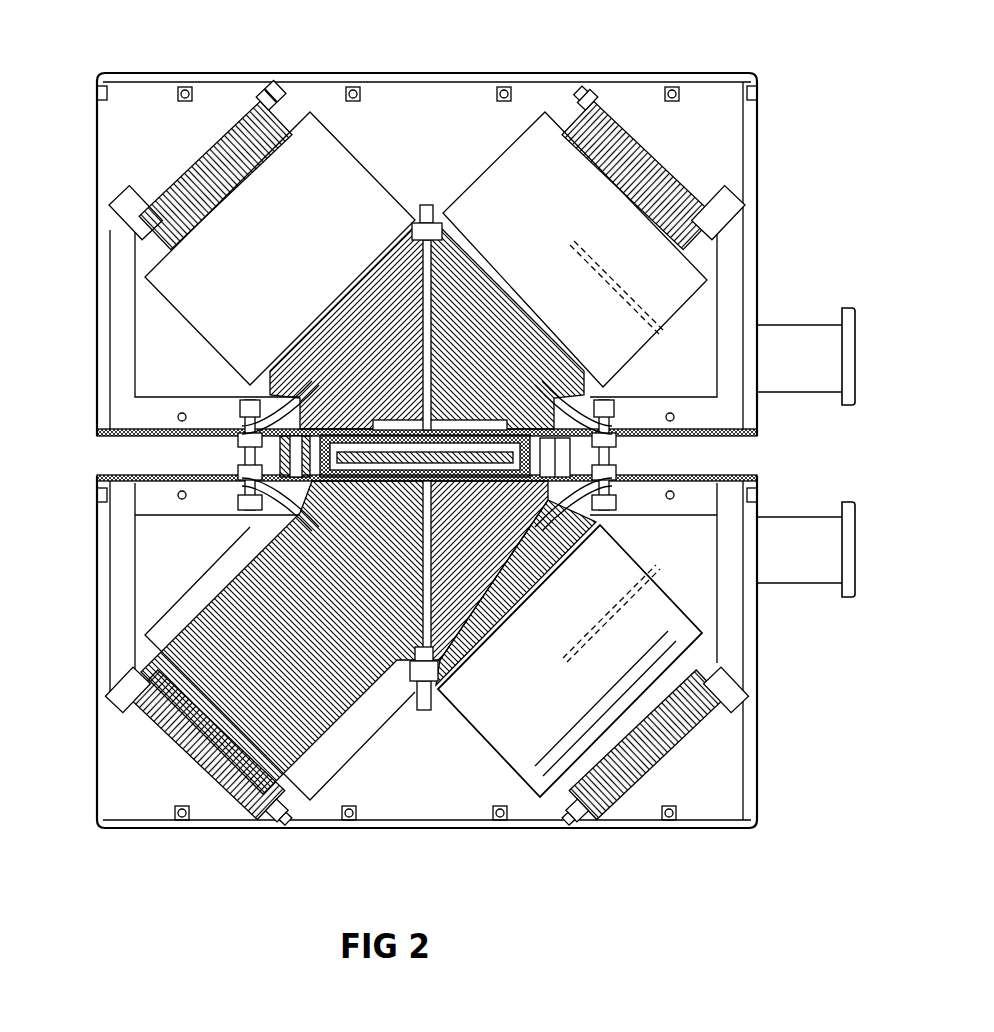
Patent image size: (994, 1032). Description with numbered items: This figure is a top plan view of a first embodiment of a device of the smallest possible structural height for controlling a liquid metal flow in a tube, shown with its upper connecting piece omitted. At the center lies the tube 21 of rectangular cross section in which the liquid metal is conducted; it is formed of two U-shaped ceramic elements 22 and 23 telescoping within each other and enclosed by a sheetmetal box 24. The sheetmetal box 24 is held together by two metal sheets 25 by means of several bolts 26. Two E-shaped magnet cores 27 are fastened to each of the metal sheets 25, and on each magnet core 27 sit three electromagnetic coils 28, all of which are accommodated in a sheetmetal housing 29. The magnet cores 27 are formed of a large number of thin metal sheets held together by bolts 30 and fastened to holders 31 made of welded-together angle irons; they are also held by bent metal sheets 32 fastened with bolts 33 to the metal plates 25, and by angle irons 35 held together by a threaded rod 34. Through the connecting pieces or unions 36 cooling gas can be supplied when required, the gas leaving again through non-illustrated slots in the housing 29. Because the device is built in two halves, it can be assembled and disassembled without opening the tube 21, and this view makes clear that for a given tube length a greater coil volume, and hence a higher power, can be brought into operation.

The tube 21 is at (560, 436).
The U-shaped ceramic element 22 is at (545, 417).
The U-shaped ceramic element 23 is at (473, 435).
The sheetmetal box 24 is at (737, 213).
The metal sheet 25 is at (705, 207).
The bolt 26 is at (660, 127).
The E-shaped magnet core 27 is at (233, 130).
The electromagnetic coil 28 is at (227, 227).
The sheetmetal housing 29 is at (146, 82).
The bolt 30 is at (272, 96).
The holder 31 is at (122, 238).
The bent metal sheet 32 is at (297, 398).
The bolt 33 is at (250, 470).
The threaded rod 34 is at (423, 700).
The angle iron 35 is at (440, 684).
The connecting piece 36 is at (806, 570).